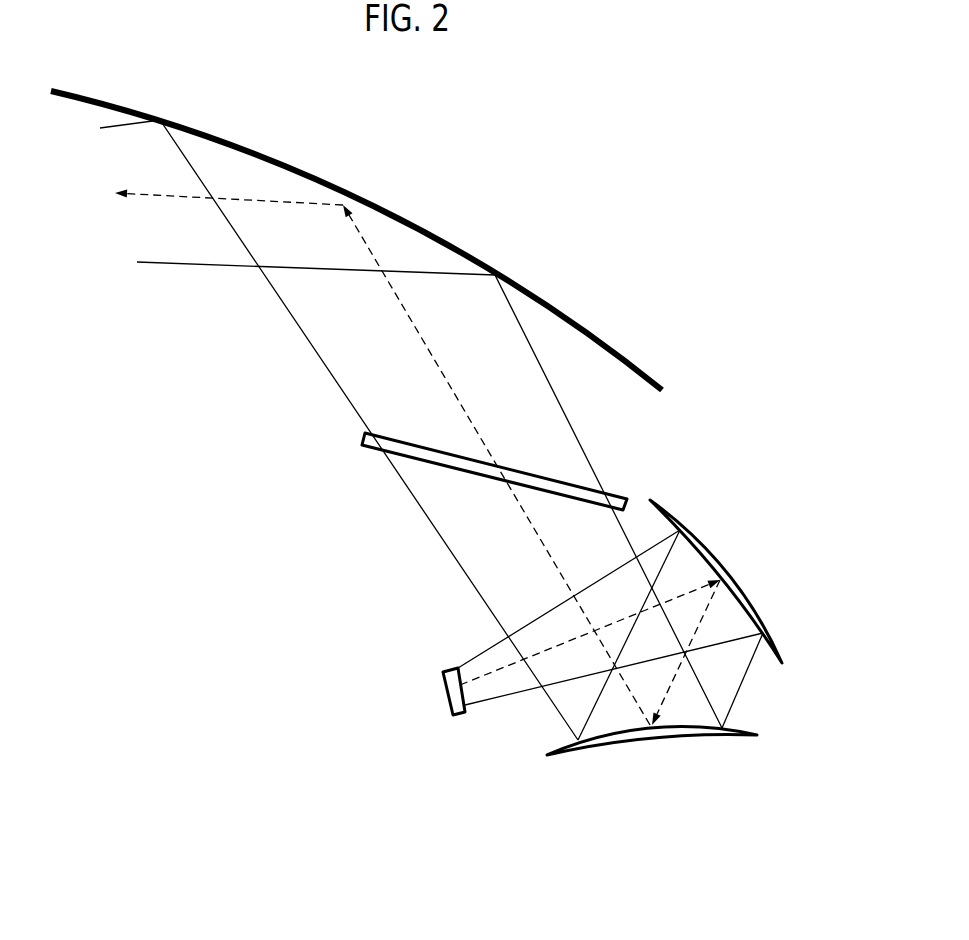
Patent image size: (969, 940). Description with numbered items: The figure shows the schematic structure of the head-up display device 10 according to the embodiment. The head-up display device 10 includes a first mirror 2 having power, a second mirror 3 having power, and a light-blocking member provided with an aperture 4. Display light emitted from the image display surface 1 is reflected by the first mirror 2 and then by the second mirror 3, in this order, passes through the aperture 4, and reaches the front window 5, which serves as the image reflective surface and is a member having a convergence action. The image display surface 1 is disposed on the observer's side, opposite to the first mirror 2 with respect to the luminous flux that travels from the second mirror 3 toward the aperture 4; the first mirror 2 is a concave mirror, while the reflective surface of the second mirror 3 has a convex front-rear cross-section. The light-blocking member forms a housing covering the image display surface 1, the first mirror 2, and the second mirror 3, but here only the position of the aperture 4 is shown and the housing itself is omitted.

The image display surface 1 is at (443, 692).
The first mirror 2 is at (750, 596).
The second mirror 3 is at (682, 738).
The aperture 4 is at (362, 438).
The front window (image reflective surface) 5 is at (548, 303).
The head-up display device 10 is at (244, 485).